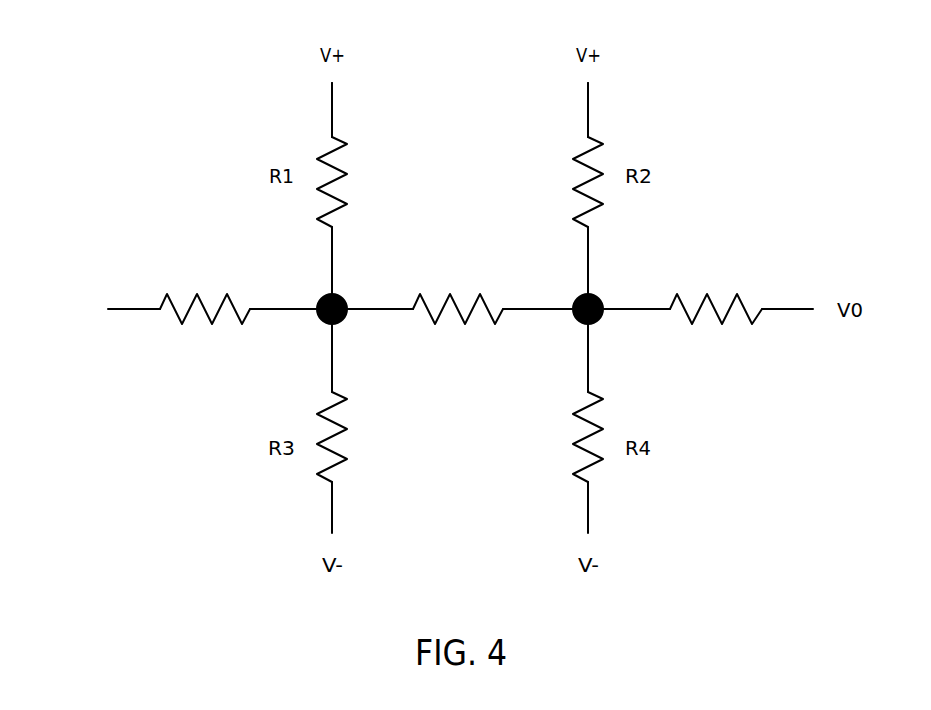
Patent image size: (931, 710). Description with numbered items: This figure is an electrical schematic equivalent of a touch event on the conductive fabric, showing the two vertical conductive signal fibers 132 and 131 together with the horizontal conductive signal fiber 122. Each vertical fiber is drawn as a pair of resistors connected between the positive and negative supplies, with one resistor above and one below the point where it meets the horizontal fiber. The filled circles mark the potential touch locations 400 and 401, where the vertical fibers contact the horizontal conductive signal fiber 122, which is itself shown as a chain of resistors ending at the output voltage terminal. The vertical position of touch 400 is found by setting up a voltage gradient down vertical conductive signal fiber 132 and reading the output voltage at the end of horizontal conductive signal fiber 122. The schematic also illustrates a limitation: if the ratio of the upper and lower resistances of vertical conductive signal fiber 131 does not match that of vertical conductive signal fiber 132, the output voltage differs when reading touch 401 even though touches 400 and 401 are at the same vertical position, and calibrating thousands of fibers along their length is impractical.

The horizontal conductive signal fiber 122 is at (175, 323).
The vertical conductive signal fiber 131 is at (644, 106).
The vertical conductive signal fiber 132 is at (280, 106).
The touch location 400 is at (276, 331).
The touch location 401 is at (640, 331).